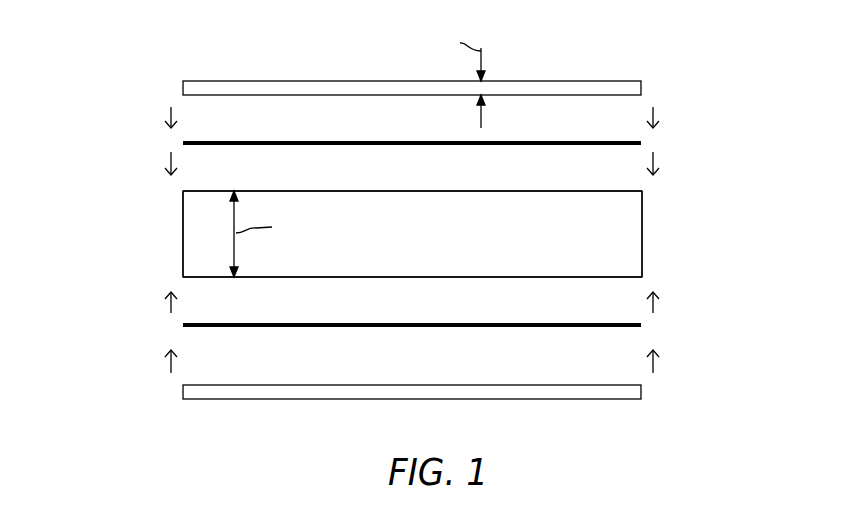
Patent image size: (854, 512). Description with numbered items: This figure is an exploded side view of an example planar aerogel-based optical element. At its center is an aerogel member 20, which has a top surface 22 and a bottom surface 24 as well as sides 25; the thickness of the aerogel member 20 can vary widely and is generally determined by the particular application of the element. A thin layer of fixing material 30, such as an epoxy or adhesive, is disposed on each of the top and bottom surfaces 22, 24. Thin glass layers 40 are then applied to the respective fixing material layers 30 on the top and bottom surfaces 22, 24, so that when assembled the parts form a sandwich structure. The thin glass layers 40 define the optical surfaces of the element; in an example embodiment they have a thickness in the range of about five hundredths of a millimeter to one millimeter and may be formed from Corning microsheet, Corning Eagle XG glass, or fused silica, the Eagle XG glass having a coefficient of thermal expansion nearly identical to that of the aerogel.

The aerogel member 20 is at (451, 242).
The top surface 22 is at (612, 191).
The bottom surface 24 is at (612, 277).
The sides 25 is at (183, 240).
The fixing material layer 30 is at (183, 143).
The thin glass layer 40 is at (642, 80).